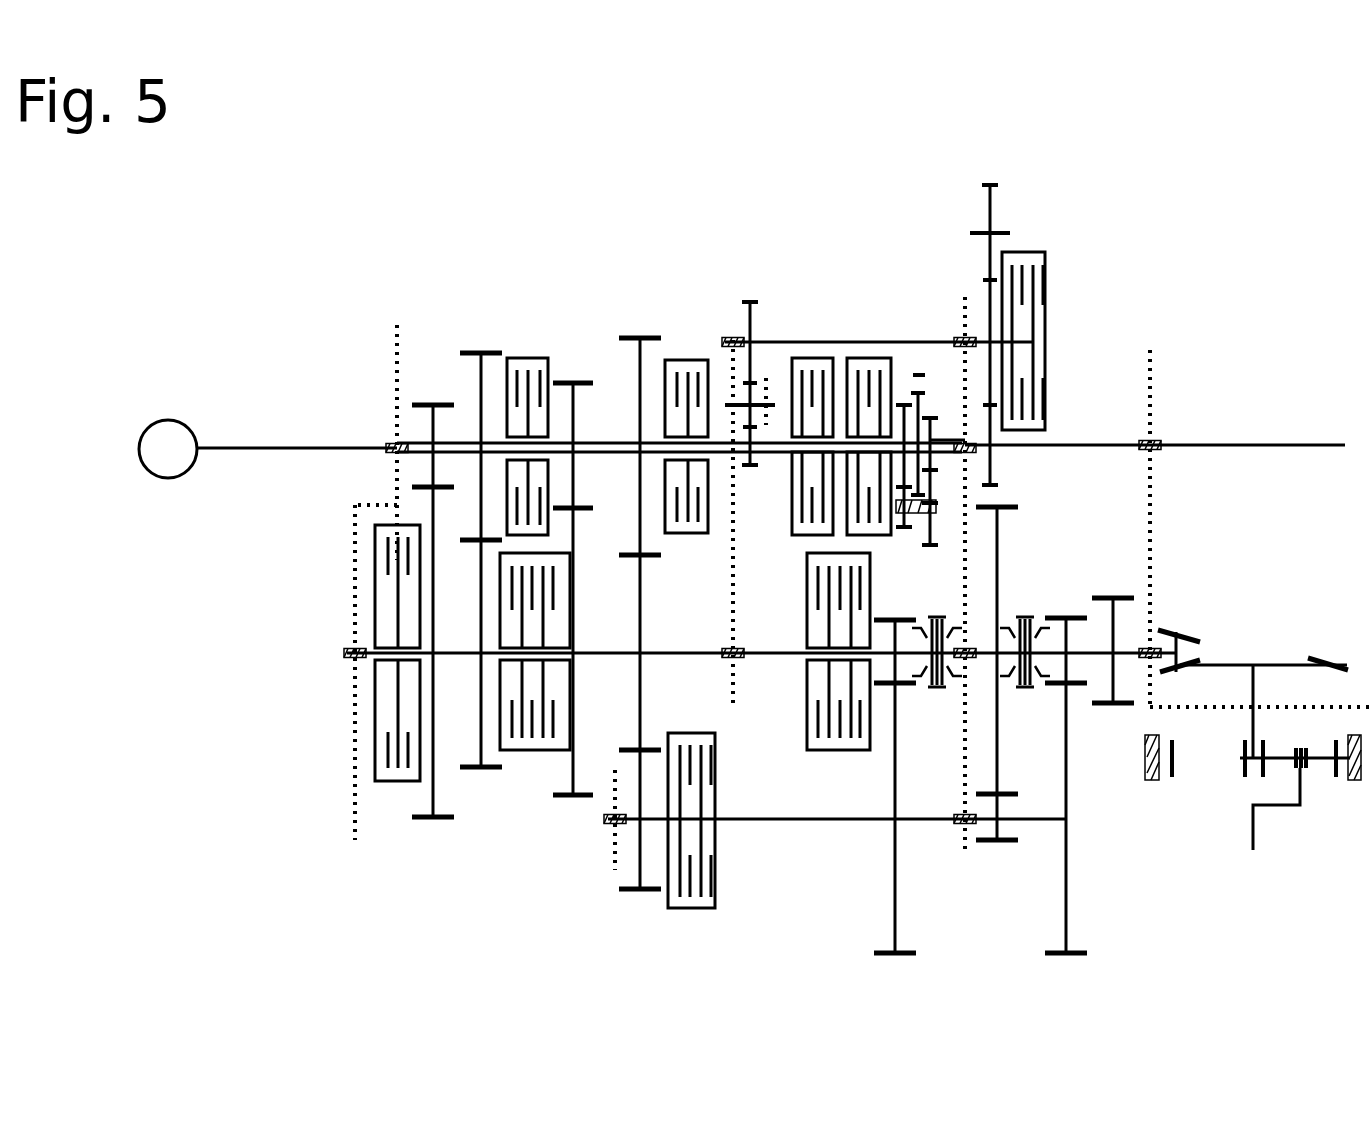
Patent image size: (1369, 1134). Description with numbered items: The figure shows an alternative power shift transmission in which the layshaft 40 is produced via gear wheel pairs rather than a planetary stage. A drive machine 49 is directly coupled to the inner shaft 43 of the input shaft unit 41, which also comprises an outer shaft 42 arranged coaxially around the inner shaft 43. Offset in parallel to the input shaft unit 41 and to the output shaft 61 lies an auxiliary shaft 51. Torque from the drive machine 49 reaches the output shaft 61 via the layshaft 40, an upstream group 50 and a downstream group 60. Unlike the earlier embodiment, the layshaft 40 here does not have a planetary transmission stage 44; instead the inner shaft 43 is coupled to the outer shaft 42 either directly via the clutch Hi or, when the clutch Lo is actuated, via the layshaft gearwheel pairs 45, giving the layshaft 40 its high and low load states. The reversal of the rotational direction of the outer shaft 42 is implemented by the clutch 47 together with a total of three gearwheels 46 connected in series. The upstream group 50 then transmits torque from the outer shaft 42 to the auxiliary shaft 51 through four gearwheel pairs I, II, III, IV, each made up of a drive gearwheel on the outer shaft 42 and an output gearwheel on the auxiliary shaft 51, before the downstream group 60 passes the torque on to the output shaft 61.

The layshaft 40 is at (907, 348).
The input shaft unit 41 is at (609, 408).
The outer shaft 42 is at (458, 440).
The inner shaft 43 is at (1212, 437).
The planetary transmission stage 44 is at (808, 350).
The layshaft gearwheel pairs 45 is at (909, 545).
The gearwheels 46 is at (726, 322).
The clutch 47 is at (1025, 252).
The drive machine 49 is at (163, 478).
The upstream group 50 is at (530, 320).
The auxiliary shaft 51 is at (350, 660).
The downstream group 60 is at (867, 352).
The output shaft 61 is at (805, 822).
The gearwheel pair I is at (433, 591).
The gearwheel pair II is at (573, 382).
The gearwheel pair III is at (478, 352).
The gearwheel pair IV is at (640, 337).